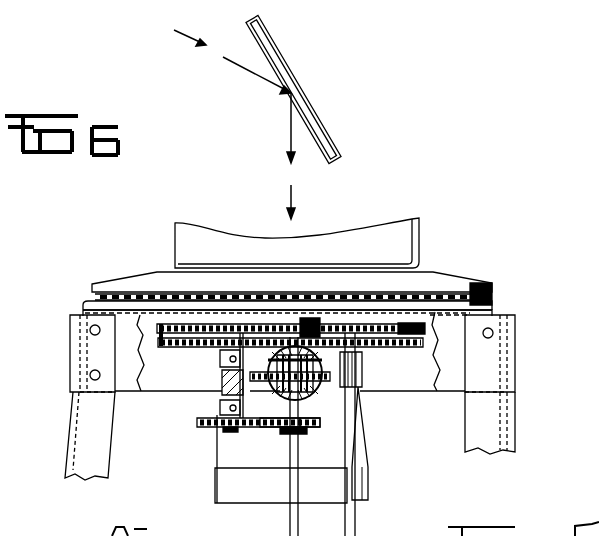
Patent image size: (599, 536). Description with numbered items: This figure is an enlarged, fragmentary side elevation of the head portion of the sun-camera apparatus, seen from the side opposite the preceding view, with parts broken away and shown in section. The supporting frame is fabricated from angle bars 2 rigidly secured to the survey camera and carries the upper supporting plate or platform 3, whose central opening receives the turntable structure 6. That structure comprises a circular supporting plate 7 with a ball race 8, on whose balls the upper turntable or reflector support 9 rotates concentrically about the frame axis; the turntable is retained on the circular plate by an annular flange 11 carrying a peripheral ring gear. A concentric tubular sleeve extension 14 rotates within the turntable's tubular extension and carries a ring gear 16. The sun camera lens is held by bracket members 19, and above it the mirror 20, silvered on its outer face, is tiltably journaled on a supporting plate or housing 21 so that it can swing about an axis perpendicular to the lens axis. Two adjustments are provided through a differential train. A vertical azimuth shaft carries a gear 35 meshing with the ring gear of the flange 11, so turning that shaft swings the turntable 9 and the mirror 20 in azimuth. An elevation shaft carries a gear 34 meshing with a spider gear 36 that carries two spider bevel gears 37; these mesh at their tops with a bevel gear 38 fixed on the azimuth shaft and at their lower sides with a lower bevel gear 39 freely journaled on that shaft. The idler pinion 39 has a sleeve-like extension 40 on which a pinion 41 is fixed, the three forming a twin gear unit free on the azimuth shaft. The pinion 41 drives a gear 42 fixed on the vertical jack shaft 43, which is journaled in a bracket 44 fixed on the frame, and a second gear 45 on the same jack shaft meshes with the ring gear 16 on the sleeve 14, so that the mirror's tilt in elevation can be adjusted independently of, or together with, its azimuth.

The angle bars 2 is at (502, 403).
The upper supporting plate or platform 3 is at (450, 348).
The turntable structure 6 is at (487, 268).
The circular supporting plate 7 is at (493, 305).
The ball race 8 is at (495, 295).
The upper turntable or reflector support 9 is at (432, 282).
The annular flange 11 is at (425, 328).
The concentric tubular sleeve extension 14 is at (385, 347).
The ring gear 16 is at (163, 347).
The bracket members 19 is at (238, 495).
The mirror 20 is at (330, 145).
The supporting plate or housing 21 is at (400, 246).
The gear 34 is at (363, 380).
The gear 35 is at (315, 320).
The spider gear 36 is at (257, 382).
The spider bevel gears 37 is at (315, 388).
The bevel gear 38 is at (275, 356).
The lower bevel gear 39 is at (310, 410).
The sleeve-like extension 40 is at (312, 428).
The pinion 41 is at (273, 428).
The gear 42 is at (200, 423).
The jack shaft 43 is at (222, 378).
The bracket 44 is at (220, 390).
The second gear 45 is at (200, 347).